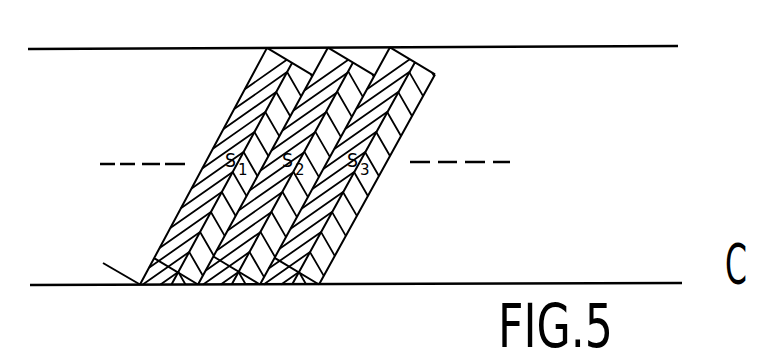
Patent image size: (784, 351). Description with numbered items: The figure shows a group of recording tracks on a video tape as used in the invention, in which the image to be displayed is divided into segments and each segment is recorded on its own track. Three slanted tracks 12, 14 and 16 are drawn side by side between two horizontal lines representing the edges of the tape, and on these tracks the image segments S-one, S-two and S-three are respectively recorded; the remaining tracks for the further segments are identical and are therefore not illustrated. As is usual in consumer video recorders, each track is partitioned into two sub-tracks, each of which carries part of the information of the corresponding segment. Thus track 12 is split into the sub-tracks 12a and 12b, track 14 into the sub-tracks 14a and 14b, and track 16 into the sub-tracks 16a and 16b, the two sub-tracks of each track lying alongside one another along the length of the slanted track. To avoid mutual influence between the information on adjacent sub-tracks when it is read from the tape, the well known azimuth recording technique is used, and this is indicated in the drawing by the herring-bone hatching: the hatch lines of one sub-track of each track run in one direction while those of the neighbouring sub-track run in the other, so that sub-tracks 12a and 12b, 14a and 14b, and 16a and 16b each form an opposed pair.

The track 12 is at (289, 62).
The sub-track 12a is at (163, 281).
The sub-track 12b is at (192, 282).
The track 14 is at (350, 60).
The sub-track 14a is at (227, 281).
The sub-track 14b is at (247, 286).
The track 16 is at (408, 62).
The sub-track 16a is at (283, 281).
The sub-track 16b is at (305, 282).